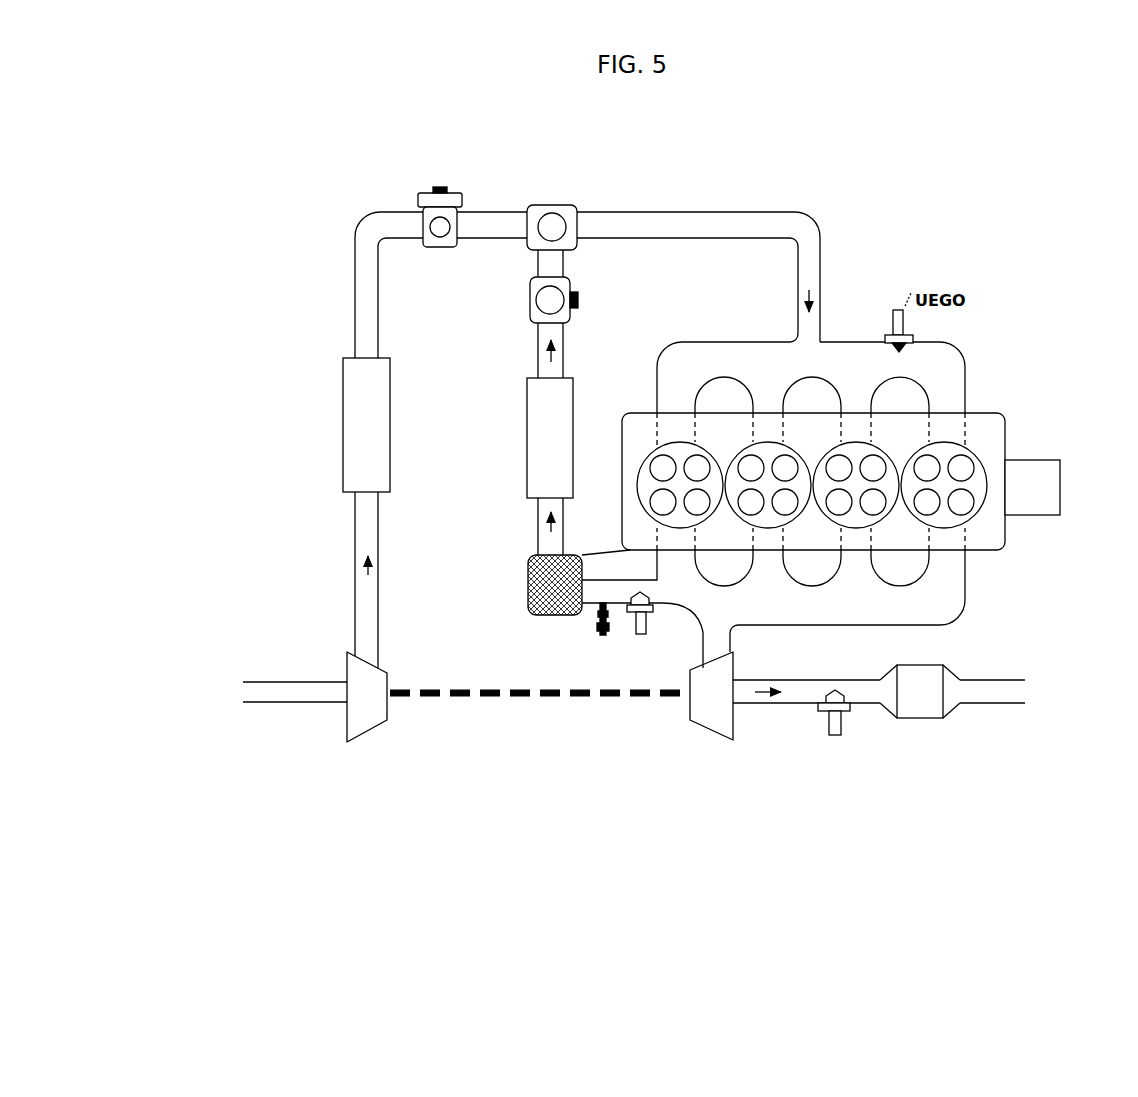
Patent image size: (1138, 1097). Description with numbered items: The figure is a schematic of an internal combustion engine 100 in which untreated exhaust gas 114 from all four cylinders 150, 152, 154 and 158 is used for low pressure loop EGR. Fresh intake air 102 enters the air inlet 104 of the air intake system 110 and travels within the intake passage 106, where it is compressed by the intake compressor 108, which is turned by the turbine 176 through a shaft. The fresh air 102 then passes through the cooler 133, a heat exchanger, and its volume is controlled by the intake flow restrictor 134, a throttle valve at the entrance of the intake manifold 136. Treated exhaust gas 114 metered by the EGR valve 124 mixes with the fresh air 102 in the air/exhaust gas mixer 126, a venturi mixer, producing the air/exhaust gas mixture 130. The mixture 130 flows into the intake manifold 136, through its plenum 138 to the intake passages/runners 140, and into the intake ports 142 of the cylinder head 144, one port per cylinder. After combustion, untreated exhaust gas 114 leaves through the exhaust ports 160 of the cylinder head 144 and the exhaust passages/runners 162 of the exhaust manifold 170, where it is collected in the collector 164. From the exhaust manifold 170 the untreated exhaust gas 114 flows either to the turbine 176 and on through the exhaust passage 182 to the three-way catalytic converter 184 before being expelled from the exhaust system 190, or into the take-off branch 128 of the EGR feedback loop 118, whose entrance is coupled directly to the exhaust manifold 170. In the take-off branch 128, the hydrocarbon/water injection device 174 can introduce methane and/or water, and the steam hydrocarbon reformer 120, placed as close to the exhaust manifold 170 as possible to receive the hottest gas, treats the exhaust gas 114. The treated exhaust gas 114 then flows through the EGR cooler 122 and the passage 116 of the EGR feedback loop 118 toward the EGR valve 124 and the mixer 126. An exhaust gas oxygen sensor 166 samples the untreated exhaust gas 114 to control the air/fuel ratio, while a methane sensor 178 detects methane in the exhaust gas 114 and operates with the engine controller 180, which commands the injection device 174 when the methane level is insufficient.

The internal combustion engine 100 is at (210, 128).
The fresh intake air 102 is at (260, 692).
The air inlet 104 is at (247, 700).
The intake passage 106 is at (368, 232).
The intake compressor 108 is at (425, 704).
The air intake system 110 is at (266, 242).
The exhaust gas 114 is at (908, 609).
The passage 116 is at (552, 514).
The EGR feedback loop 118 is at (666, 270).
The steam hydrocarbon reformer 120 is at (502, 599).
The EGR cooler 122 is at (525, 438).
The EGR valve 124 is at (566, 327).
The air/exhaust gas mixer 126 is at (552, 215).
The take-off branch 128 is at (619, 648).
The air/exhaust gas mixture 130 is at (684, 225).
The cooler 133 is at (342, 425).
The intake flow restrictor 134 is at (440, 230).
The intake manifold 136 is at (976, 342).
The plenum 138 is at (855, 360).
The intake passages/runners 140 is at (676, 402).
The intake port 142 is at (854, 428).
The cylinder head 144 is at (642, 540).
The cylinder 150 is at (690, 481).
The cylinder 152 is at (775, 481).
The cylinder 154 is at (862, 481).
The cylinder 158 is at (950, 481).
The exhaust ports 160 is at (847, 544).
The exhaust passages/runners 162 is at (950, 565).
The collector 164 is at (940, 607).
The exhaust gas oxygen sensor 166 is at (830, 737).
The exhaust manifold 170 is at (794, 631).
The hydrocarbon/water injection device 174 is at (582, 624).
The turbine 176 is at (655, 704).
The methane sensor 178 is at (631, 655).
The engine controller 180 is at (1032, 487).
The exhaust passage 182 is at (1005, 692).
The catalytic converter 184 is at (920, 719).
The exhaust system 190 is at (880, 787).